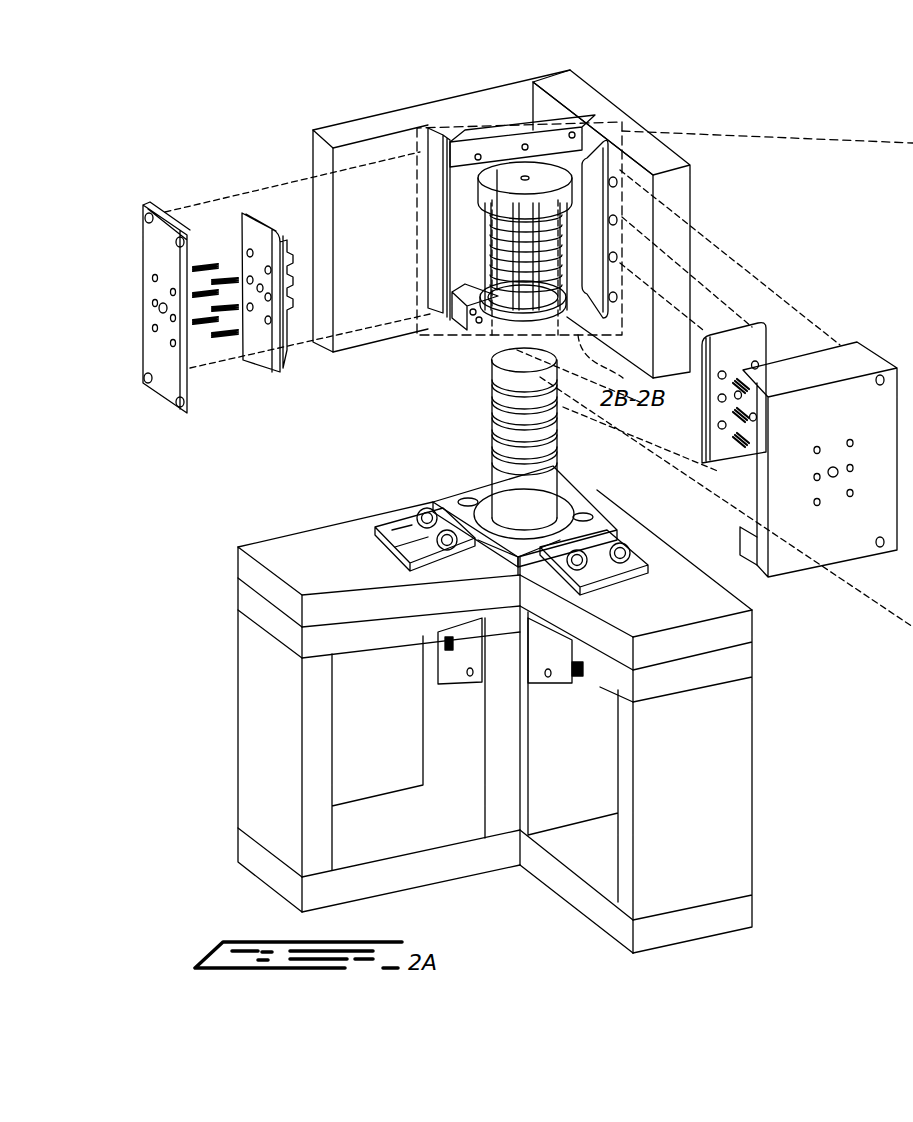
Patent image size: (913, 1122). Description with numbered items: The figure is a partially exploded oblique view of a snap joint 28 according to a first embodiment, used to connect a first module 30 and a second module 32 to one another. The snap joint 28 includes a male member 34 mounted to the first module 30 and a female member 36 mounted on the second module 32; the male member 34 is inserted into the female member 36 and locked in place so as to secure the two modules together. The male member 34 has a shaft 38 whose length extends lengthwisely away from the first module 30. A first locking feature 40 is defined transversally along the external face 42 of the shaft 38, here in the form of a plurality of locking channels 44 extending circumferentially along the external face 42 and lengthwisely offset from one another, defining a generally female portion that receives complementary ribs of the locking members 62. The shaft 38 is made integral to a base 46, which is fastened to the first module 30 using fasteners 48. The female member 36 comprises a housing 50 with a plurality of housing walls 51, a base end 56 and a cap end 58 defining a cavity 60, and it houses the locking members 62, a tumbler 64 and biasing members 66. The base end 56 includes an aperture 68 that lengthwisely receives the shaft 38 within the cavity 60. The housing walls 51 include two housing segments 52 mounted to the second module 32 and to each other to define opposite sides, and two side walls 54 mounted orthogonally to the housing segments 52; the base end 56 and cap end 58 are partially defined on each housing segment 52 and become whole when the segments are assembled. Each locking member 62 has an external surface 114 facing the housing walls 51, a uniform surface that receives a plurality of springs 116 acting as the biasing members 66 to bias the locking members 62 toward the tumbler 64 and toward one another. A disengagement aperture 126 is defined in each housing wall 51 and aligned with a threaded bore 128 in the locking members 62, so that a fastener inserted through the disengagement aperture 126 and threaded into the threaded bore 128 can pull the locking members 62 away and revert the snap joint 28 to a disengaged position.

The snap joint 28 is at (198, 112).
The first module 30 is at (693, 878).
The second module 32 is at (660, 157).
The male member 34 is at (517, 517).
The female member 36 is at (563, 108).
The shaft 38 is at (507, 498).
The first locking feature 40 is at (523, 447).
The external face 42 is at (545, 497).
The locking channels 44 is at (527, 420).
The base 46 is at (600, 623).
The fasteners 48 is at (377, 527).
The housing 50 is at (430, 175).
The housing walls 51 is at (165, 388).
The housing segments 52 is at (870, 405).
The side walls 54 is at (163, 230).
The base end 56 is at (455, 322).
The cap end 58 is at (473, 142).
The cavity 60 is at (493, 260).
The locking members 62 is at (727, 340).
The tumbler 64 is at (525, 165).
The biasing members 66 is at (213, 345).
The aperture 68 is at (512, 322).
The external surface 114 is at (250, 225).
The springs 116 is at (230, 340).
The disengagement apertures 126 is at (159, 308).
The threaded bore 128 is at (735, 378).